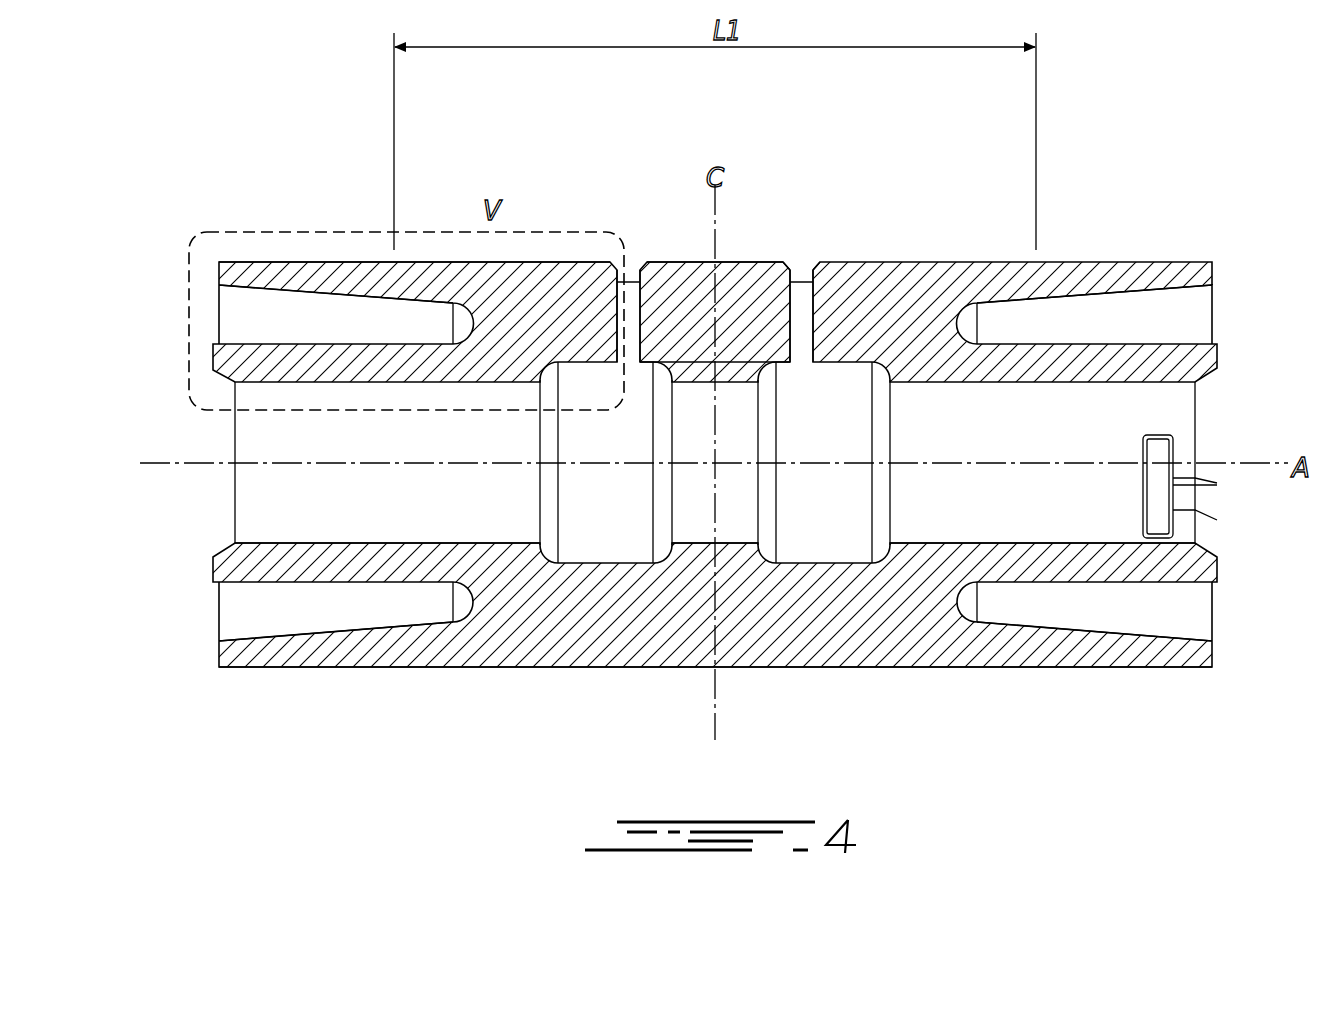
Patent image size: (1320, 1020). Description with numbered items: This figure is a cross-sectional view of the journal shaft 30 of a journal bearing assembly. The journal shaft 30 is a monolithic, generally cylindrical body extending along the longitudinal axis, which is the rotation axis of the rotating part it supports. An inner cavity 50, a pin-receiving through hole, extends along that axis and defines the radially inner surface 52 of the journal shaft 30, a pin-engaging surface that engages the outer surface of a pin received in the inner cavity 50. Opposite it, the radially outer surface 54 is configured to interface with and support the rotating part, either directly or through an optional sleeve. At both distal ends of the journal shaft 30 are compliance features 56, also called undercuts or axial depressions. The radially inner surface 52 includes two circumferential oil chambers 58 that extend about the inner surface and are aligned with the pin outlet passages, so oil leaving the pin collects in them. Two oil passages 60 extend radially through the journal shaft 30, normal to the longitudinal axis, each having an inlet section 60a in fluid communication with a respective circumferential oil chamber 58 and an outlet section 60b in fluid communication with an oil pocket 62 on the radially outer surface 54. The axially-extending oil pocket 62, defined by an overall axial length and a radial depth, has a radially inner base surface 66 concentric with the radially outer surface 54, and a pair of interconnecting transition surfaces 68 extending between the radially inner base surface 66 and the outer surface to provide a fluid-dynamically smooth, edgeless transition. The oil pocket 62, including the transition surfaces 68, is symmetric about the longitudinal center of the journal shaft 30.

The journal shaft 30 is at (1183, 214).
The inner cavity 50 is at (270, 435).
The radially inner surface 52 is at (290, 543).
The radially outer surface 54 is at (318, 262).
The compliance features 56 is at (245, 318).
The circumferential oil chamber 58 is at (605, 543).
The oil passage 60 is at (632, 300).
The inlet section 60a is at (815, 355).
The outlet section 60b is at (809, 275).
The oil pocket 62 is at (909, 247).
The radially inner base surface 66 is at (690, 262).
The interconnecting transition surfaces 68 is at (420, 262).